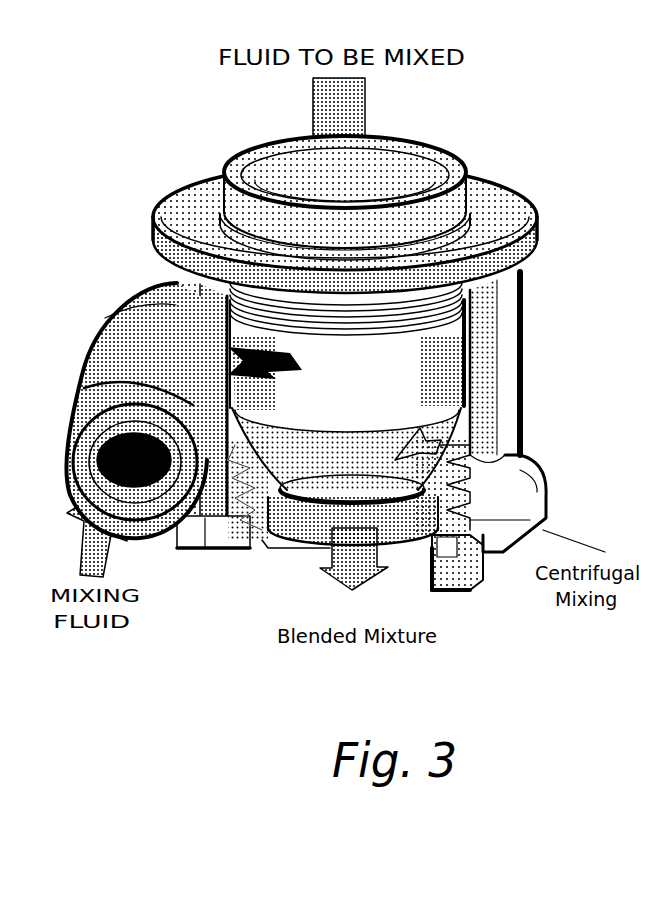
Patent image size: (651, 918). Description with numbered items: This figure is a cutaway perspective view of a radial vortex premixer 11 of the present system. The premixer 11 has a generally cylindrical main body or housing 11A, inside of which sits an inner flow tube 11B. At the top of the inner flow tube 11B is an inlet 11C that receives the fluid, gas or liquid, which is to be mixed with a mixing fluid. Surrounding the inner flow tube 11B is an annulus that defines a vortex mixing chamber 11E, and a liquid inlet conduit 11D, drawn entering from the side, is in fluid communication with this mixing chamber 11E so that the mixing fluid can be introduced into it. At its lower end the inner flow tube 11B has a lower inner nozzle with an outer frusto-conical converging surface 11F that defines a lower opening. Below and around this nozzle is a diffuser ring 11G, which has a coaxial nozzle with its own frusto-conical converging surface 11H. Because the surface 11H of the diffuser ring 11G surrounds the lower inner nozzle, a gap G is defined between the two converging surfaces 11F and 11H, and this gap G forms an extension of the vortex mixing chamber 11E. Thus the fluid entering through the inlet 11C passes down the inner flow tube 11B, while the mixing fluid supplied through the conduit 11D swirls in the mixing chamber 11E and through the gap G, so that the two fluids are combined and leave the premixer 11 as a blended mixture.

The radial vortex premixer 11 is at (503, 138).
The main body or housing 11A is at (523, 352).
The inner flow tube 11B is at (378, 388).
The inlet 11C is at (397, 166).
The liquid inlet conduit 11D is at (88, 380).
The vortex mixing chamber 11E is at (450, 455).
The outer frusto-conical converging surface 11F is at (407, 487).
The diffuser ring 11G is at (463, 568).
The frusto-conical converging surface 11H is at (423, 520).
The gap G is at (284, 550).